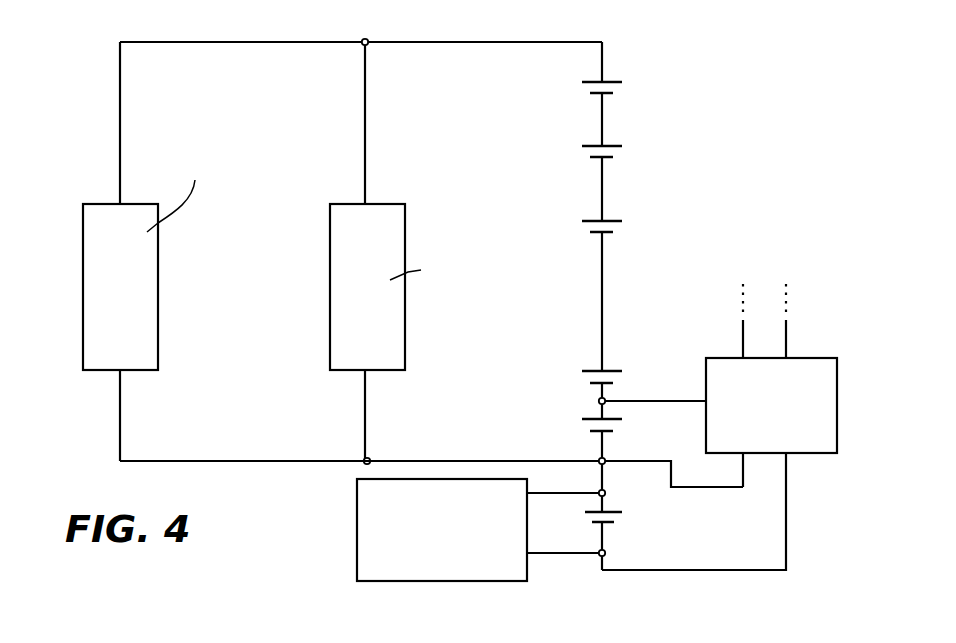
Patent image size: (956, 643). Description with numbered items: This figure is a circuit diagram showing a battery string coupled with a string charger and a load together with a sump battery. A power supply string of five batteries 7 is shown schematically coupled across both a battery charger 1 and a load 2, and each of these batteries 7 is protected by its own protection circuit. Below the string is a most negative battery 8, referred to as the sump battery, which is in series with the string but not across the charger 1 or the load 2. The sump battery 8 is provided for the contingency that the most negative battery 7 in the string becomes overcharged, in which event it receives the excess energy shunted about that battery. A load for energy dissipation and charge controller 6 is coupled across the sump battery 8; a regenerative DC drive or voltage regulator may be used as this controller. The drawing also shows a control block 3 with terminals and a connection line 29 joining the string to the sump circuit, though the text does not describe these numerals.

The battery charger 1 is at (83, 252).
The load 2 is at (330, 252).
The controller / switching unit 3 is at (822, 358).
The load for energy dissipation and charge controller 6 is at (357, 531).
The batteries 7 is at (590, 80).
The sump battery 8 is at (620, 510).
The connection line 29 is at (452, 461).